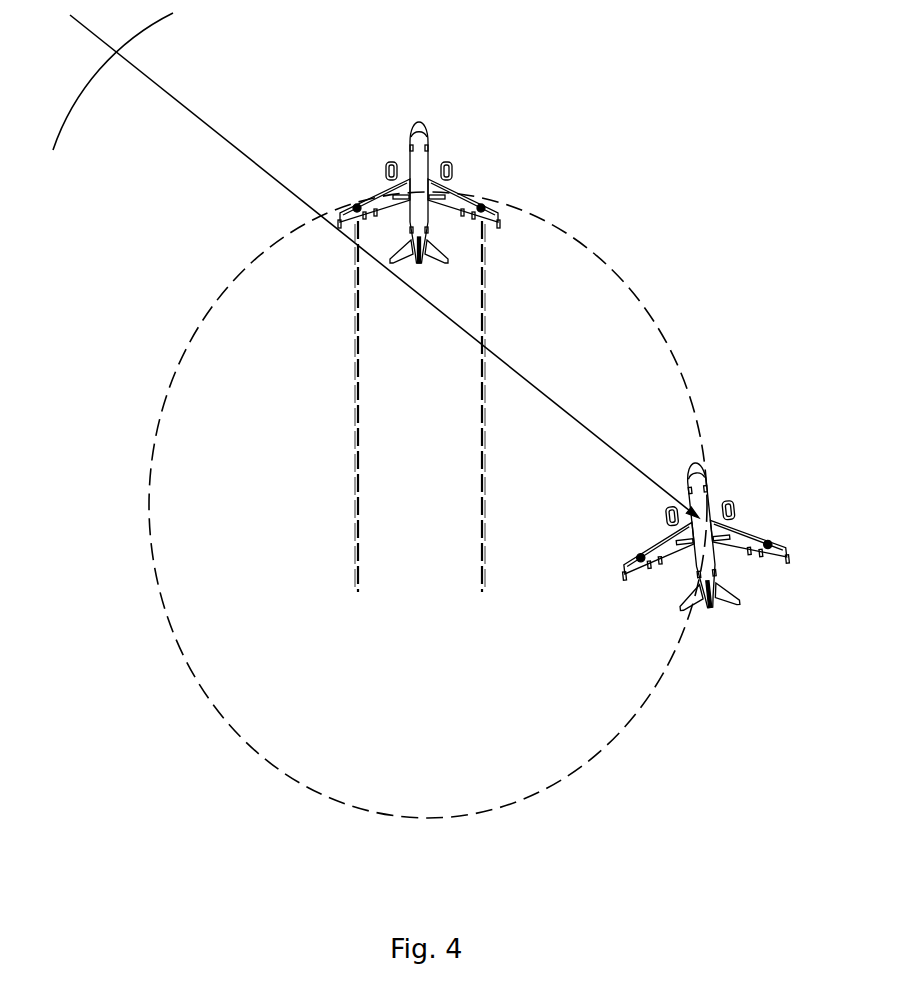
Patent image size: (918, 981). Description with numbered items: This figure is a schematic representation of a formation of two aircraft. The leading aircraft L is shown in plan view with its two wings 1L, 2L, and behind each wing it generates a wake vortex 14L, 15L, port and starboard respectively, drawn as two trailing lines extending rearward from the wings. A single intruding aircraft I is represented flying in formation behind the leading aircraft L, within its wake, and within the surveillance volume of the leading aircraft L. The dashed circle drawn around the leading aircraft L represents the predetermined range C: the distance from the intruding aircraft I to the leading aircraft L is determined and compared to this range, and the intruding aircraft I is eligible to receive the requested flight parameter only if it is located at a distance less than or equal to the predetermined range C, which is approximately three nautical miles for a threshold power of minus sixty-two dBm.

The predetermined range C is at (115, 54).
The leading aircraft L is at (451, 164).
The wing 1L is at (378, 187).
The wing 2L is at (453, 187).
The wake vortex 14L is at (355, 335).
The wake vortex 15L is at (484, 334).
The intruding aircraft I is at (707, 477).